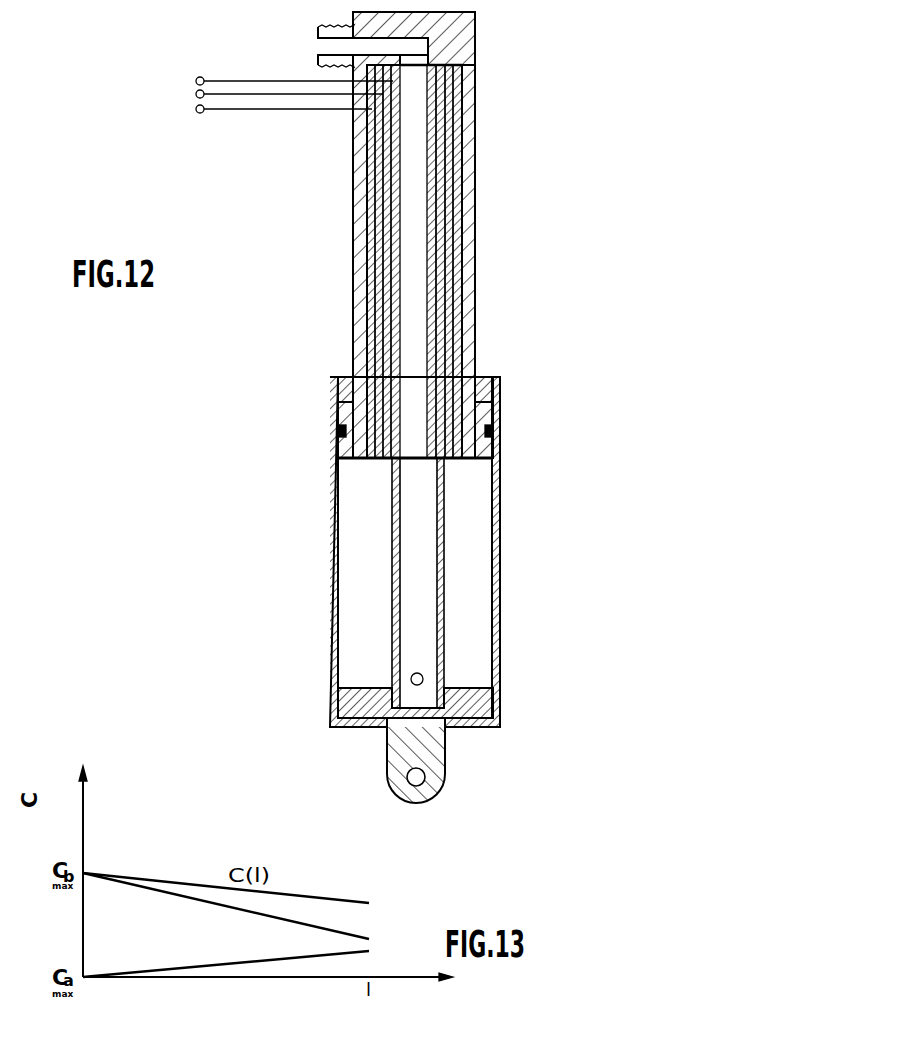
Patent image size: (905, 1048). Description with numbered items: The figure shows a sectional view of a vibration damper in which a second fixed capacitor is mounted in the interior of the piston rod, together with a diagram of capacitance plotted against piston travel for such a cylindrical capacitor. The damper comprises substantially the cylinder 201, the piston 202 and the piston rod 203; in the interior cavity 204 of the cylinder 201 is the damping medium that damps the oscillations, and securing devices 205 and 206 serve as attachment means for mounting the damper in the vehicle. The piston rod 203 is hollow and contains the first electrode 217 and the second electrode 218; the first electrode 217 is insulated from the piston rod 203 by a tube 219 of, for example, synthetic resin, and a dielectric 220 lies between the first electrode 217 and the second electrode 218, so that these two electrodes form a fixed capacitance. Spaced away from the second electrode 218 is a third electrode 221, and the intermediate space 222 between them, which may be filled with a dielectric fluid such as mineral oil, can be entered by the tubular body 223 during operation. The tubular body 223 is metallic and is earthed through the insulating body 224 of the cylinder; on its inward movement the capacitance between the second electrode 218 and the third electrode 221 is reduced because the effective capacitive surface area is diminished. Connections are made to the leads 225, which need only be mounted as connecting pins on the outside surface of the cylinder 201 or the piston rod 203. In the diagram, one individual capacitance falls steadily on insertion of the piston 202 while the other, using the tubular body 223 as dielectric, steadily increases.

The cylinder 201 is at (497, 483).
The piston 202 is at (480, 415).
The piston rod 203 is at (468, 118).
The interior cavity 204 is at (475, 552).
The securing device 205 is at (413, 20).
The securing device 206 is at (437, 767).
The first electrode 217 is at (452, 208).
The second electrode 218 is at (447, 287).
The tube 219 is at (463, 172).
The dielectric 220 is at (453, 246).
The third electrode 221 is at (433, 365).
The intermediate space 222 is at (440, 325).
The tubular body 223 is at (443, 627).
The insulating body 224 is at (480, 703).
The leads 225 is at (196, 82).